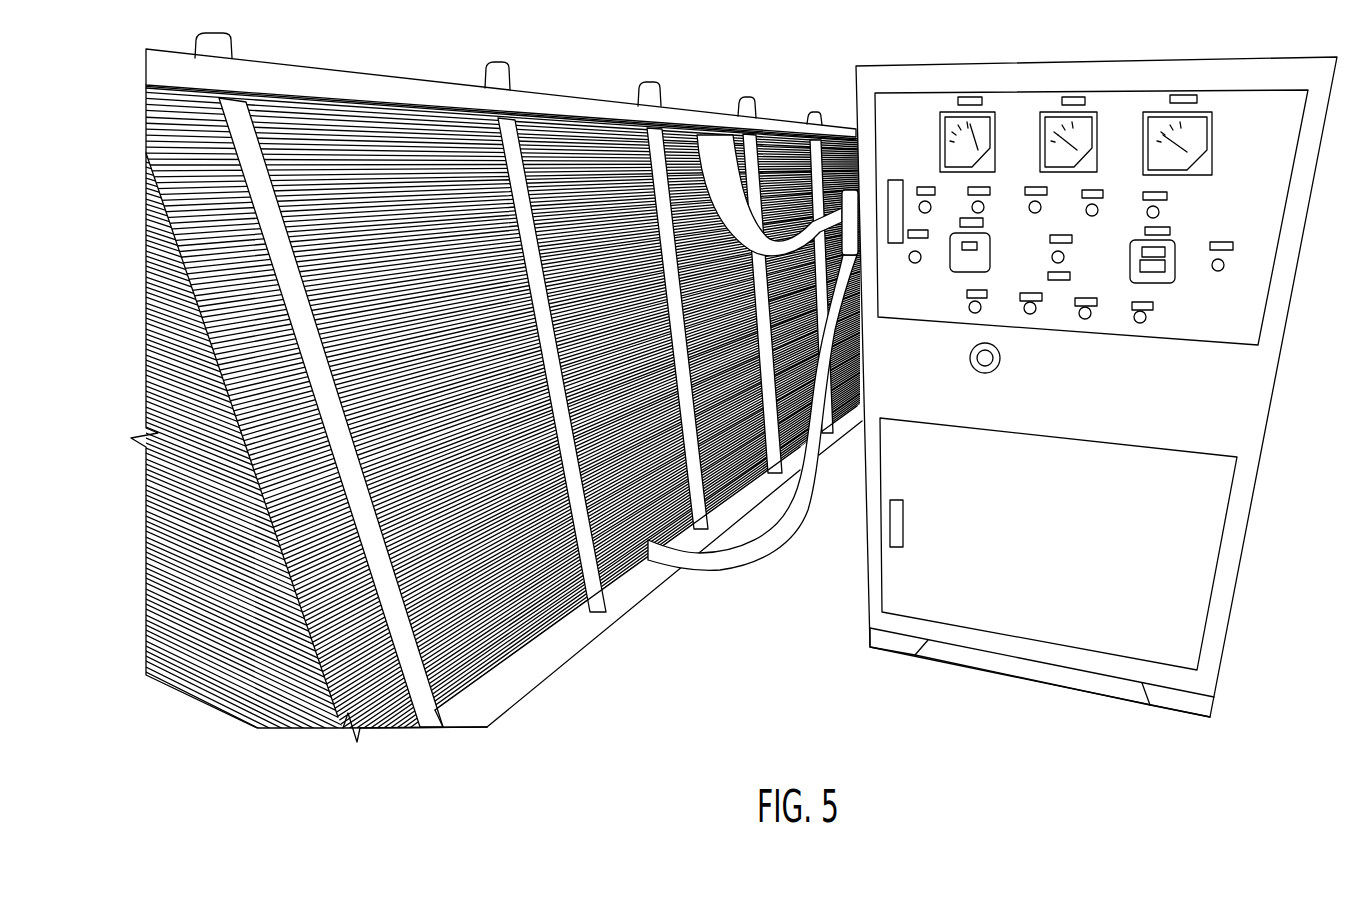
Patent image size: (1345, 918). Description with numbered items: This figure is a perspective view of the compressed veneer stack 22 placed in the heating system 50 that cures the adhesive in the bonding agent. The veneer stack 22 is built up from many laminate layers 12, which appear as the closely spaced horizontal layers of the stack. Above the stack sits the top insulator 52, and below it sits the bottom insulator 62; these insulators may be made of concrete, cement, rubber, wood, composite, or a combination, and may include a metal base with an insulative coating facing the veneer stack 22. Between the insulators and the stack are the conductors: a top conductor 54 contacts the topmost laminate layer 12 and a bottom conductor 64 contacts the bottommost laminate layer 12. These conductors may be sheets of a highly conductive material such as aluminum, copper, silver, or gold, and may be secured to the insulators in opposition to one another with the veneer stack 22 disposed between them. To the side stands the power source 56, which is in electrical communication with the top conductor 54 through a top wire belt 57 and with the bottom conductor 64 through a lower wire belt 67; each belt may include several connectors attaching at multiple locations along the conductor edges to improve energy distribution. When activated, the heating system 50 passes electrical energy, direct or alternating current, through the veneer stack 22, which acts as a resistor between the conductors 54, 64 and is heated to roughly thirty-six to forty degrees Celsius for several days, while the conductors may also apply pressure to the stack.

The laminate layer 12 is at (287, 682).
The veneer stack 22 is at (499, 672).
The heating system 50 is at (964, 775).
The top insulator 52 is at (560, 105).
The top conductor 54 is at (603, 126).
The power source 56 is at (1150, 653).
The top wire belt 57 is at (730, 202).
The bottom insulator 62 is at (622, 608).
The bottom conductor 64 is at (563, 623).
The lower wire belt 67 is at (752, 552).